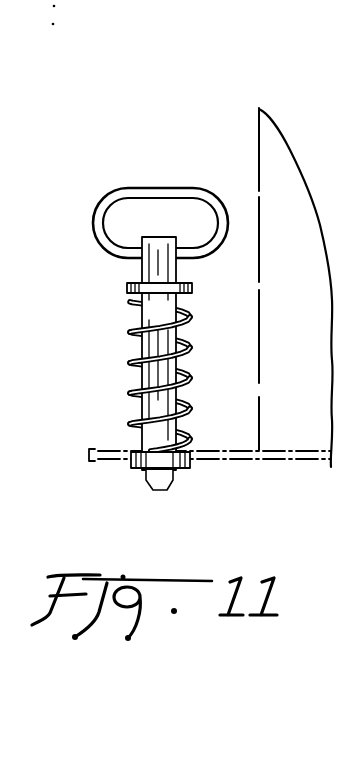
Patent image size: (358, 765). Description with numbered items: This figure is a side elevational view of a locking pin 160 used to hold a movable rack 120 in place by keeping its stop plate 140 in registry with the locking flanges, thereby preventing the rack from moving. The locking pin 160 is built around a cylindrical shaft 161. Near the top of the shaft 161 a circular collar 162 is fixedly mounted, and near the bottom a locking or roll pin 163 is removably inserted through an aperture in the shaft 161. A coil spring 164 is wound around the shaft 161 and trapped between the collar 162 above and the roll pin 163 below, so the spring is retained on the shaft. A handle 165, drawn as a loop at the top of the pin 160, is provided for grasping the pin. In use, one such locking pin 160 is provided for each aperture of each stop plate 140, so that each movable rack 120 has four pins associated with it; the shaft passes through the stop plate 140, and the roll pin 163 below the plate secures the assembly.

The movable rack 120 is at (259, 145).
The stop plate 140 is at (213, 461).
The locking pin 160 is at (120, 346).
The cylindrical shaft 161 is at (138, 407).
The circular collar 162 is at (127, 286).
The locking or roll pin 163 is at (132, 461).
The coil spring 164 is at (136, 396).
The handle 165 is at (141, 188).